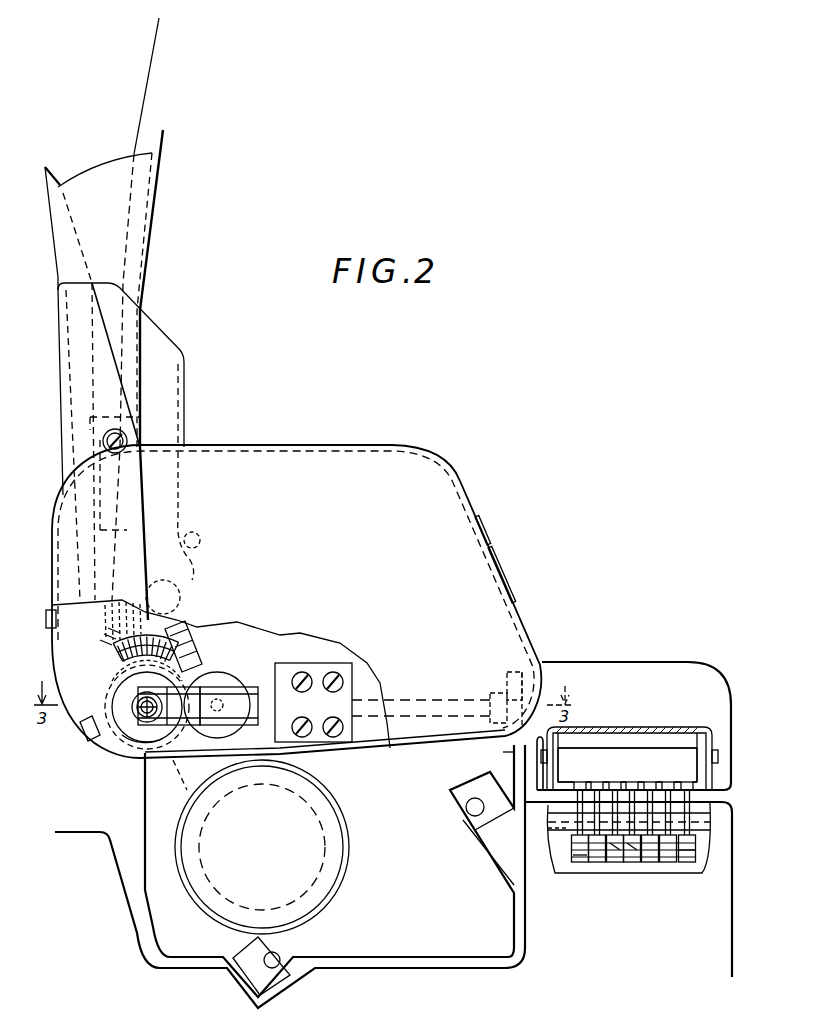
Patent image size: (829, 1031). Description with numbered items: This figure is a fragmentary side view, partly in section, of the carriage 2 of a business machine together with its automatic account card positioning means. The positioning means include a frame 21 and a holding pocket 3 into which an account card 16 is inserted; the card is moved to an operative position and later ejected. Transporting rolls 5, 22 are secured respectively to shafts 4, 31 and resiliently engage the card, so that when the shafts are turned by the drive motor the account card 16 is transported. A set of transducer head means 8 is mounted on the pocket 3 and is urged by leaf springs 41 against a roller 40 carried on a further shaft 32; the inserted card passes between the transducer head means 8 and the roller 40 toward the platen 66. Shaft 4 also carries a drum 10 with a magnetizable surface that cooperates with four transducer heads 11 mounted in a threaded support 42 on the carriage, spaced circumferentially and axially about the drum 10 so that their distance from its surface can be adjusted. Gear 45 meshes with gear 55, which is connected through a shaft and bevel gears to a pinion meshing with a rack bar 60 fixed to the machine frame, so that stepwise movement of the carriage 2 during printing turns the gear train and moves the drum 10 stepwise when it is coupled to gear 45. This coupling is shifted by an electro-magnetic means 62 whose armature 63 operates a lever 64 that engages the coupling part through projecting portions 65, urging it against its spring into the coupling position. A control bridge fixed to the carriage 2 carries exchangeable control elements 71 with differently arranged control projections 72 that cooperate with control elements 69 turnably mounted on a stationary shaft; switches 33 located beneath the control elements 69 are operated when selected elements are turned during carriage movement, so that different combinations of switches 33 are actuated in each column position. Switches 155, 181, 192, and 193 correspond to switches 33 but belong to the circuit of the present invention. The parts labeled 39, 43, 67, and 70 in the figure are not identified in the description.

The carriage 2 is at (570, 670).
The holding pocket 3 is at (108, 245).
The shaft 4 is at (110, 712).
The transporting roll 5 is at (107, 690).
The transducer head means 8 is at (120, 606).
The drum 10 is at (94, 733).
The transducer heads 11 is at (120, 638).
The account card 16 is at (145, 98).
The frame 21 is at (450, 488).
The transporting roll 22 is at (170, 758).
The shaft 31 is at (147, 750).
The shaft 32 is at (197, 600).
The switches 33 is at (578, 862).
The motor housing 39 is at (330, 877).
The roller 40 is at (197, 577).
The leaf springs 41 is at (107, 675).
The support 42 is at (110, 650).
The cam 43 is at (197, 667).
The gear 45 is at (127, 757).
The gear 55 is at (222, 733).
The rack bar 60 is at (500, 743).
The electro-magnetic means 62 is at (352, 715).
The armature 63 is at (270, 712).
The lever 64 is at (230, 700).
The projecting portions 65 is at (117, 747).
The platen 66 is at (313, 900).
The terminal housing 67 is at (602, 730).
The control elements 69 is at (695, 799).
The lead wire 70 is at (567, 827).
The control elements 71 is at (675, 758).
The control projections 72 is at (615, 782).
The switch 155 is at (573, 858).
The switch 181 is at (692, 852).
The switch 192 is at (632, 862).
The switch 193 is at (615, 862).